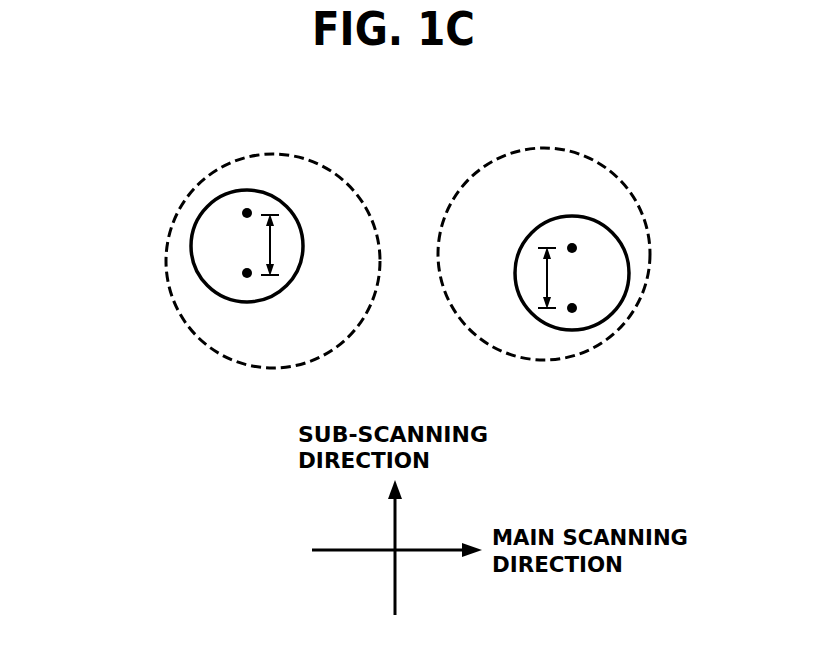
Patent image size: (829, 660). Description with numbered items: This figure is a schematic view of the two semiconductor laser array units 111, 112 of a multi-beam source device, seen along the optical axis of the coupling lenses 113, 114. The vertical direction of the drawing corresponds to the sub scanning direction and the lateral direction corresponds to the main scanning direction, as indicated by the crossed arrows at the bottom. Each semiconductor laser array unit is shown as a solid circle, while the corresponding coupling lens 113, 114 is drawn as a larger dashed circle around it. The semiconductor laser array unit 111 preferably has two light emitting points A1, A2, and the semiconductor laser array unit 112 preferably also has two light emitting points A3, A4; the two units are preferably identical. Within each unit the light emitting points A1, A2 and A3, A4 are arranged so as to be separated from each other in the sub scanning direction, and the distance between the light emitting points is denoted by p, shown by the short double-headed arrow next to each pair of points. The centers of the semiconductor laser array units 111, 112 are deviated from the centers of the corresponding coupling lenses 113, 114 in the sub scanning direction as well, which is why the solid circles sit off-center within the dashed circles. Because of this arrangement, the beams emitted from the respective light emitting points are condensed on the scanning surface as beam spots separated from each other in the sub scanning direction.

The semiconductor laser array unit 111 is at (607, 226).
The semiconductor laser array unit 112 is at (192, 243).
The coupling lens 113 is at (650, 275).
The coupling lens 114 is at (176, 308).
The light emitting point A1 is at (572, 248).
The light emitting point A2 is at (572, 308).
The light emitting point A3 is at (247, 213).
The light emitting point A4 is at (247, 273).
The distance between light emitting points p is at (269, 246).